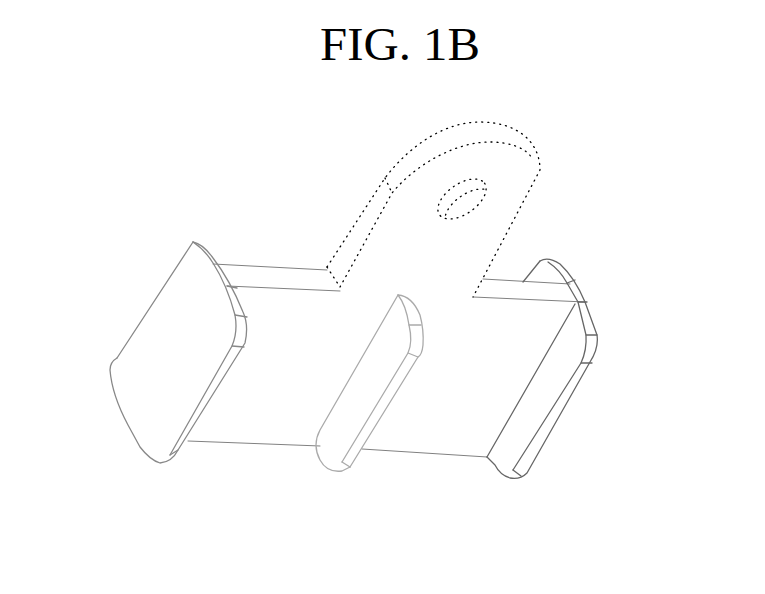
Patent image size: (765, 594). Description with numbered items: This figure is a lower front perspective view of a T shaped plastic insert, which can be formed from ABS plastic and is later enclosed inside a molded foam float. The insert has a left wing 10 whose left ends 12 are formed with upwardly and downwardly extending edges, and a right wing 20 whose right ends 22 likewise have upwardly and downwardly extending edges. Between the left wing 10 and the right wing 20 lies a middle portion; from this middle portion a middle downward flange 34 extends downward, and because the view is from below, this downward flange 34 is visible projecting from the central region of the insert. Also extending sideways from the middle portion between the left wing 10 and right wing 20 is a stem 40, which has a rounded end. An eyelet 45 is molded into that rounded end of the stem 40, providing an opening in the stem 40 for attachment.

The left wing 10 is at (285, 418).
The left ends of upwardly and downwardly extending edges 12 is at (133, 393).
The right wing 20 is at (448, 455).
The right ends of upwardly and downwardly extending edges 22 is at (552, 420).
The middle downward flange 34 is at (393, 393).
The stem 40 is at (513, 196).
The eyelet 45 is at (477, 185).